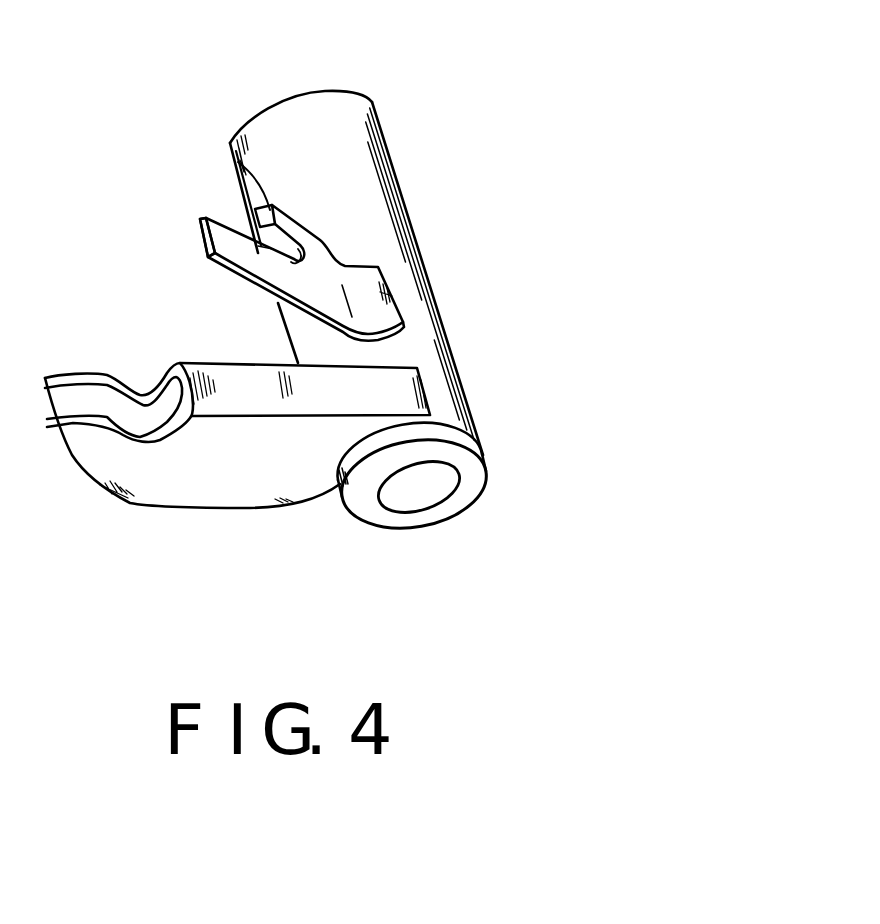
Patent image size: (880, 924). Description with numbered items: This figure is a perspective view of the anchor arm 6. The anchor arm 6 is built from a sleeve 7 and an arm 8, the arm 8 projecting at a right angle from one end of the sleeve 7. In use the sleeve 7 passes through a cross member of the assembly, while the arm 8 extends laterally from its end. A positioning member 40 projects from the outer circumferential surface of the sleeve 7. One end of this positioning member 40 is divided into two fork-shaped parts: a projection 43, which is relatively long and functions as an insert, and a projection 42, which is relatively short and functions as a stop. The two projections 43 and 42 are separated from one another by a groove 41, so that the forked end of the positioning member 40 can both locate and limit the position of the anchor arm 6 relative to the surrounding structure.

The anchor arm 6 is at (331, 281).
The sleeve 7 is at (386, 179).
The arm 8 is at (223, 488).
The positioning member 40 is at (301, 236).
The groove 41 is at (257, 238).
The projection 42 is at (233, 160).
The projection 43 is at (210, 257).